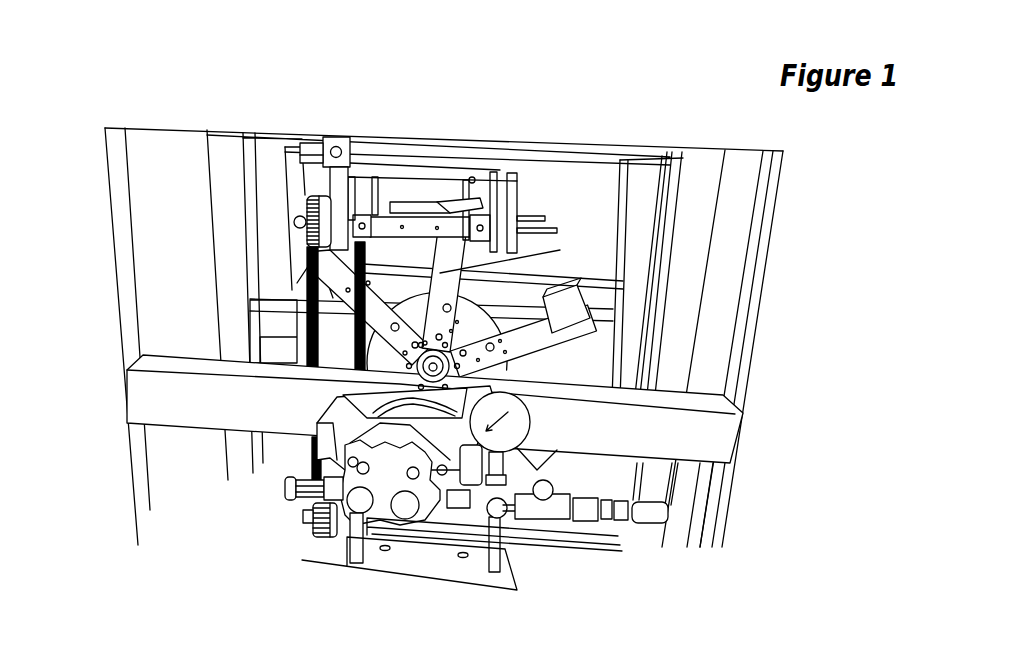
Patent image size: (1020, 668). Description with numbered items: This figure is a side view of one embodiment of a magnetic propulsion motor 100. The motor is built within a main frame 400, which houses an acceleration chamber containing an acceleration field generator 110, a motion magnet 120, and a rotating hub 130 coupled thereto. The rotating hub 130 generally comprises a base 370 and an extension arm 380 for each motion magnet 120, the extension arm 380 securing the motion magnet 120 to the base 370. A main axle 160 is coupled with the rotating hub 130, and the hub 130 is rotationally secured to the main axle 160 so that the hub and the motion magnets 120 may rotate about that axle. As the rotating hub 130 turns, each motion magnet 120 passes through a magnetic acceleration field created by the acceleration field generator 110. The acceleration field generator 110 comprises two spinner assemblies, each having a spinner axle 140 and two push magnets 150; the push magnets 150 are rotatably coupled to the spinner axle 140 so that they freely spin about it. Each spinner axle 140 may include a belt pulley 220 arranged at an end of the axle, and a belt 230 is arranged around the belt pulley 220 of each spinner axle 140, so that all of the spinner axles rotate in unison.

The magnetic propulsion motor 100 is at (404, 332).
The acceleration field generator 110 is at (262, 212).
The motion magnet 120 is at (300, 290).
The rotating hub 130 is at (435, 347).
The spinner axle 140 is at (520, 230).
The push magnet 150 is at (422, 223).
The main axle 160 is at (433, 368).
The belt pulley 220 is at (330, 186).
The belt 230 is at (311, 202).
The base 370 is at (490, 367).
The extension arm 380 is at (478, 372).
The main frame 400 is at (595, 430).